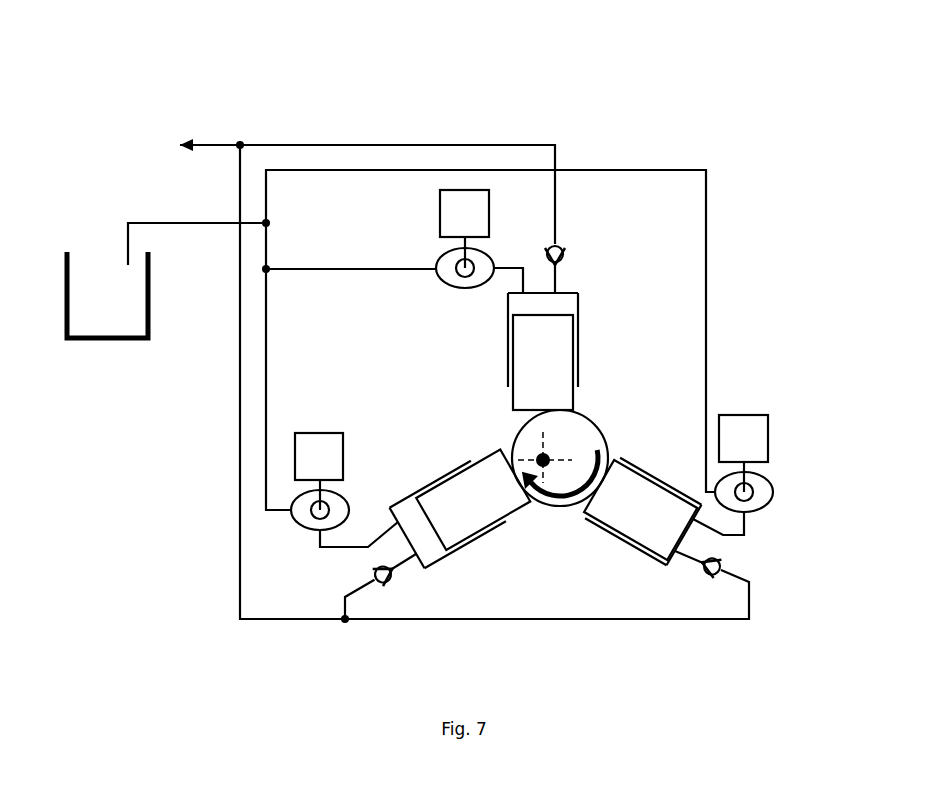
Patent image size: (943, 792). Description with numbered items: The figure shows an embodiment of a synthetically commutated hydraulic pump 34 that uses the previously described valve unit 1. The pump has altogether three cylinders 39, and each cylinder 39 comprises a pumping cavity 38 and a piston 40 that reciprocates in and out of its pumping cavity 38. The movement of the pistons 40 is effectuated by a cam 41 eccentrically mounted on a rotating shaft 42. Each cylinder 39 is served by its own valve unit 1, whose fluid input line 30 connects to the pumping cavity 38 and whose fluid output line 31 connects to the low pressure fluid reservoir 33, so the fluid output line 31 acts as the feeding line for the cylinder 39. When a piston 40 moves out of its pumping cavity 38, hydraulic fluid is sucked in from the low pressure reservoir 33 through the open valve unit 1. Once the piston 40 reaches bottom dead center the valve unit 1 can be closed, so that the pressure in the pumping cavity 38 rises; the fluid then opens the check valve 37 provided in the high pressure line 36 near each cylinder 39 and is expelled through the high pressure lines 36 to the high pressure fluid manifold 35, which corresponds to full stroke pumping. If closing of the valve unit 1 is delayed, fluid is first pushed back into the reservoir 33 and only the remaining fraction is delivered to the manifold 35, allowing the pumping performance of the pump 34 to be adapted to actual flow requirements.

The valve unit 1 is at (469, 211).
The fluid input line 30 is at (508, 266).
The fluid output line 31 is at (425, 264).
The low pressure fluid reservoir 33 is at (103, 326).
The synthetically commutated hydraulic pump 34 is at (651, 126).
The high pressure fluid manifold 35 is at (219, 143).
The high pressure lines 36 is at (494, 143).
The check valves 37 is at (569, 245).
The pumping cavity 38 is at (564, 302).
The cylinder 39 is at (581, 311).
The piston 40 is at (561, 344).
The cam 41 is at (589, 426).
The rotating shaft 42 is at (558, 451).